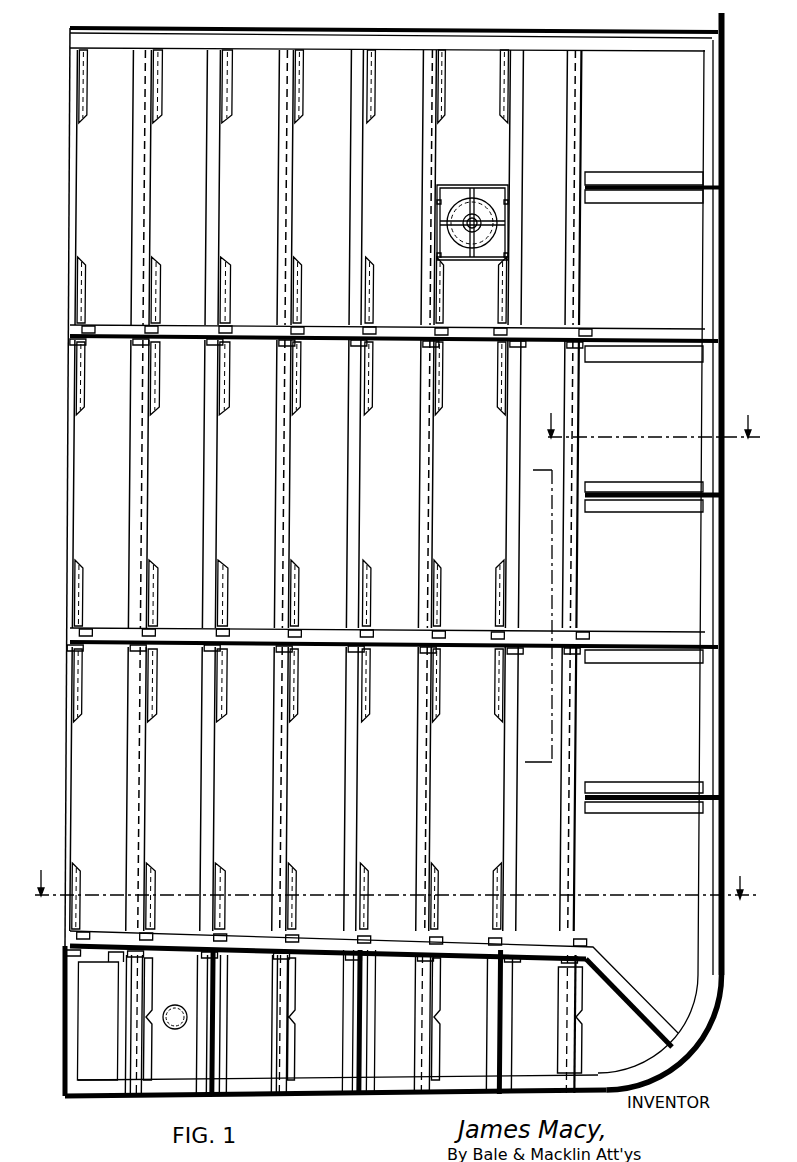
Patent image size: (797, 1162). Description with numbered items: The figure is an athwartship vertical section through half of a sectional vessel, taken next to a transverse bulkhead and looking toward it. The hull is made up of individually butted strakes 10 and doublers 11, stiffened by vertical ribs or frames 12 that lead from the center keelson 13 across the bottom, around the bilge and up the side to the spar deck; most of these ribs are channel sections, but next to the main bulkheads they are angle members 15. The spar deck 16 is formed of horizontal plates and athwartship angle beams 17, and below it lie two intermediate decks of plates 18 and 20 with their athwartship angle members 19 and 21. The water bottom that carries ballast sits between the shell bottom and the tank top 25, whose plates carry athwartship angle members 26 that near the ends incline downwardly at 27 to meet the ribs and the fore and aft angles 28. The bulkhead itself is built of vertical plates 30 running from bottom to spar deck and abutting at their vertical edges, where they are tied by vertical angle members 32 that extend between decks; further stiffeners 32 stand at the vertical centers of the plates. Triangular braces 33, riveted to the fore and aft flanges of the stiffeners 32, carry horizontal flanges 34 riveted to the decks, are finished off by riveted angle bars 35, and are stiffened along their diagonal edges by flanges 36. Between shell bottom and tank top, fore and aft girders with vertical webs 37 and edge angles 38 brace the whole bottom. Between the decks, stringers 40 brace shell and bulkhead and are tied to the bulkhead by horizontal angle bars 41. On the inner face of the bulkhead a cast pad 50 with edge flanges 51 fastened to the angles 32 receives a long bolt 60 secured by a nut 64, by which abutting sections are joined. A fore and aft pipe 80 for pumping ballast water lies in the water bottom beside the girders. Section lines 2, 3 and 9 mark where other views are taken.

The strakes 10 is at (724, 242).
The doublers 11 is at (712, 245).
The vertical ribs or frames 12 is at (408, 1088).
The center keelson 13 is at (74, 1020).
The angle members 15 is at (702, 714).
The spar deck 16 is at (441, 30).
The athwartship angle beams 17 is at (650, 46).
The intermediate deck plates 18 is at (592, 338).
The athwartship angle members 19 is at (176, 325).
The intermediate deck plates 20 is at (396, 656).
The athwartship angle members 21 is at (385, 627).
The tank top 25 is at (470, 958).
The athwartship angle members 26 is at (451, 947).
The downwardly inclined portion 27 is at (637, 988).
The fore and aft angles 28 is at (688, 1050).
The vertical bulkhead plates 30 is at (417, 490).
The vertical angle members (stiffeners) 32 is at (202, 165).
The triangular braces 33 is at (357, 296).
The horizontal flanges 34 is at (500, 634).
The riveted angle bars 35 is at (516, 636).
The flanges 36 is at (512, 903).
The vertical webs 37 is at (362, 1008).
The fore and aft angles 38 is at (518, 958).
The stringers 40 is at (630, 493).
The horizontal angle bars 41 is at (664, 173).
The pad 50 is at (486, 192).
The edge flanges 51 is at (446, 186).
The long bolts 60 is at (482, 222).
The nut 64 is at (473, 262).
The pipe 80 is at (175, 1005).
The section line 2— 2 is at (653, 415).
The section line 3 is at (538, 603).
The section line 9 is at (391, 883).